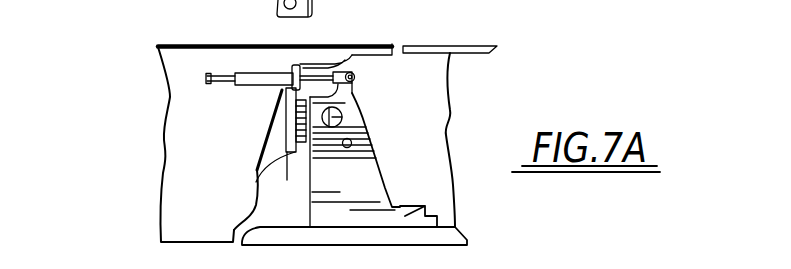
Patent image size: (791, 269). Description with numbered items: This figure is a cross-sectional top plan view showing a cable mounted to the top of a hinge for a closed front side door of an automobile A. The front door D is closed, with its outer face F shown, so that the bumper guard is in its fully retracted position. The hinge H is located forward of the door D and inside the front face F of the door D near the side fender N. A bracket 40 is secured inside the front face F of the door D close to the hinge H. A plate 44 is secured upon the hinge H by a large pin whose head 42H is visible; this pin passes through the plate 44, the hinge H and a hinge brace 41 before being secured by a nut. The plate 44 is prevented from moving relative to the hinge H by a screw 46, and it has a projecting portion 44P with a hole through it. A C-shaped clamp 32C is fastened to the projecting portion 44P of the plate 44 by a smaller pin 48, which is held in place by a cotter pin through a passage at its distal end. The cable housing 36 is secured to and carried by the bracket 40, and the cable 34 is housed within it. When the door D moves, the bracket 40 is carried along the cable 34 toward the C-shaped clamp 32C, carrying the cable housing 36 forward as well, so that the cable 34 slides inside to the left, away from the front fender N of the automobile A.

The outer face F is at (187, 45).
The C-shaped clamp 32C is at (352, 68).
The side fender N is at (474, 42).
The automobile A is at (452, 110).
The front door D is at (161, 149).
The cable 34 is at (218, 75).
The cable housing 36 is at (255, 73).
The bracket 40 is at (308, 65).
The smaller pin 48 is at (355, 76).
The projecting portion 44P is at (357, 85).
The plate 44 is at (362, 118).
The head 42H is at (322, 120).
The screw 46 is at (352, 160).
The hinge brace 41 is at (287, 181).
The hinge H is at (380, 193).